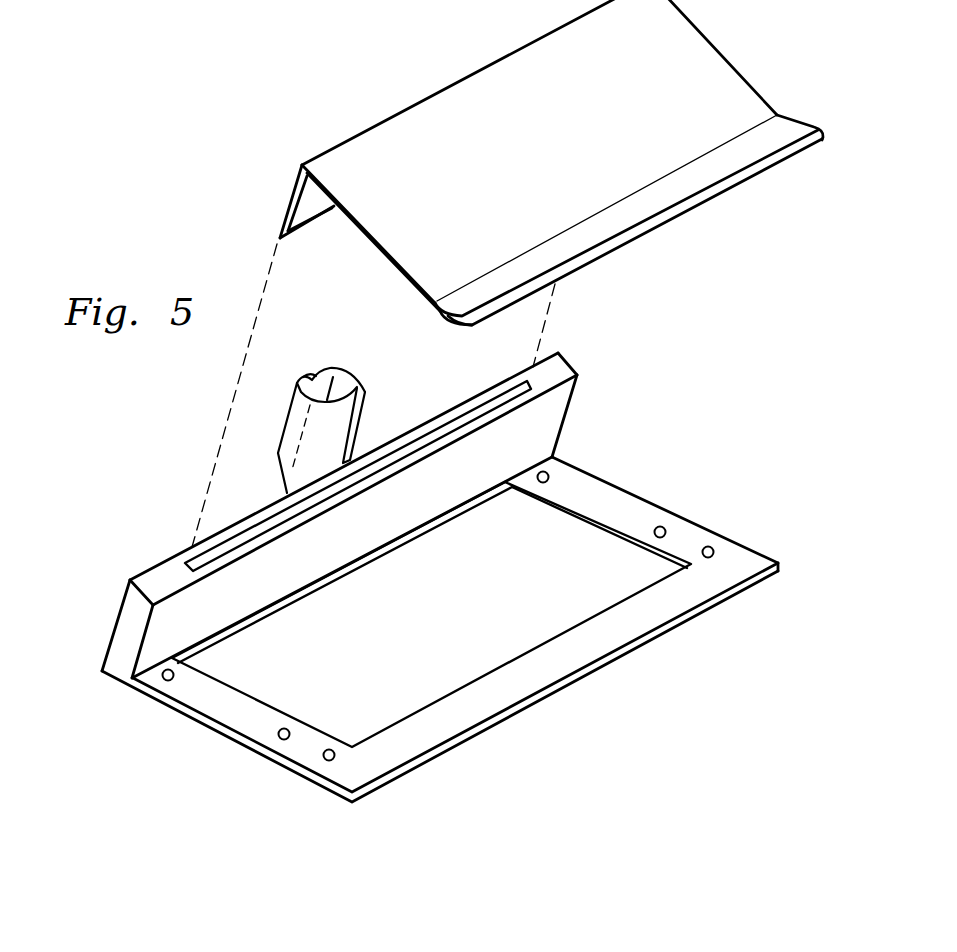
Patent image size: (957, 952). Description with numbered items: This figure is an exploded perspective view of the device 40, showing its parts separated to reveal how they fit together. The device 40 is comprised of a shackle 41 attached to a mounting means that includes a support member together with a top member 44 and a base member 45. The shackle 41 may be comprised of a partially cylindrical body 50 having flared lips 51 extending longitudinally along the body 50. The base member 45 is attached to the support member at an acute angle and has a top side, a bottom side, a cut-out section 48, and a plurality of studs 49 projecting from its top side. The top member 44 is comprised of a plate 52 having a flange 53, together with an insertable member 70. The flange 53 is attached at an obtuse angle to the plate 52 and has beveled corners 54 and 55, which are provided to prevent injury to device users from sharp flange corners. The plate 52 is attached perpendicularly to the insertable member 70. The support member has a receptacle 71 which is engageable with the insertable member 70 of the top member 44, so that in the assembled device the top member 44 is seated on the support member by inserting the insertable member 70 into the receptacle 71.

The device 40 is at (643, 368).
The shackle 41 is at (367, 383).
The top member 44 is at (556, 161).
The base member 45 is at (493, 722).
The cut-out section 48 is at (456, 623).
The studs 49 is at (174, 680).
The partially cylindrical body 50 is at (340, 432).
The flared lips 51 is at (332, 370).
The plate 52 is at (702, 52).
The flange 53 is at (655, 203).
The beveled corner 54 is at (822, 134).
The beveled corner 55 is at (473, 323).
The insertable member 70 is at (290, 200).
The receptacle 71 is at (252, 533).